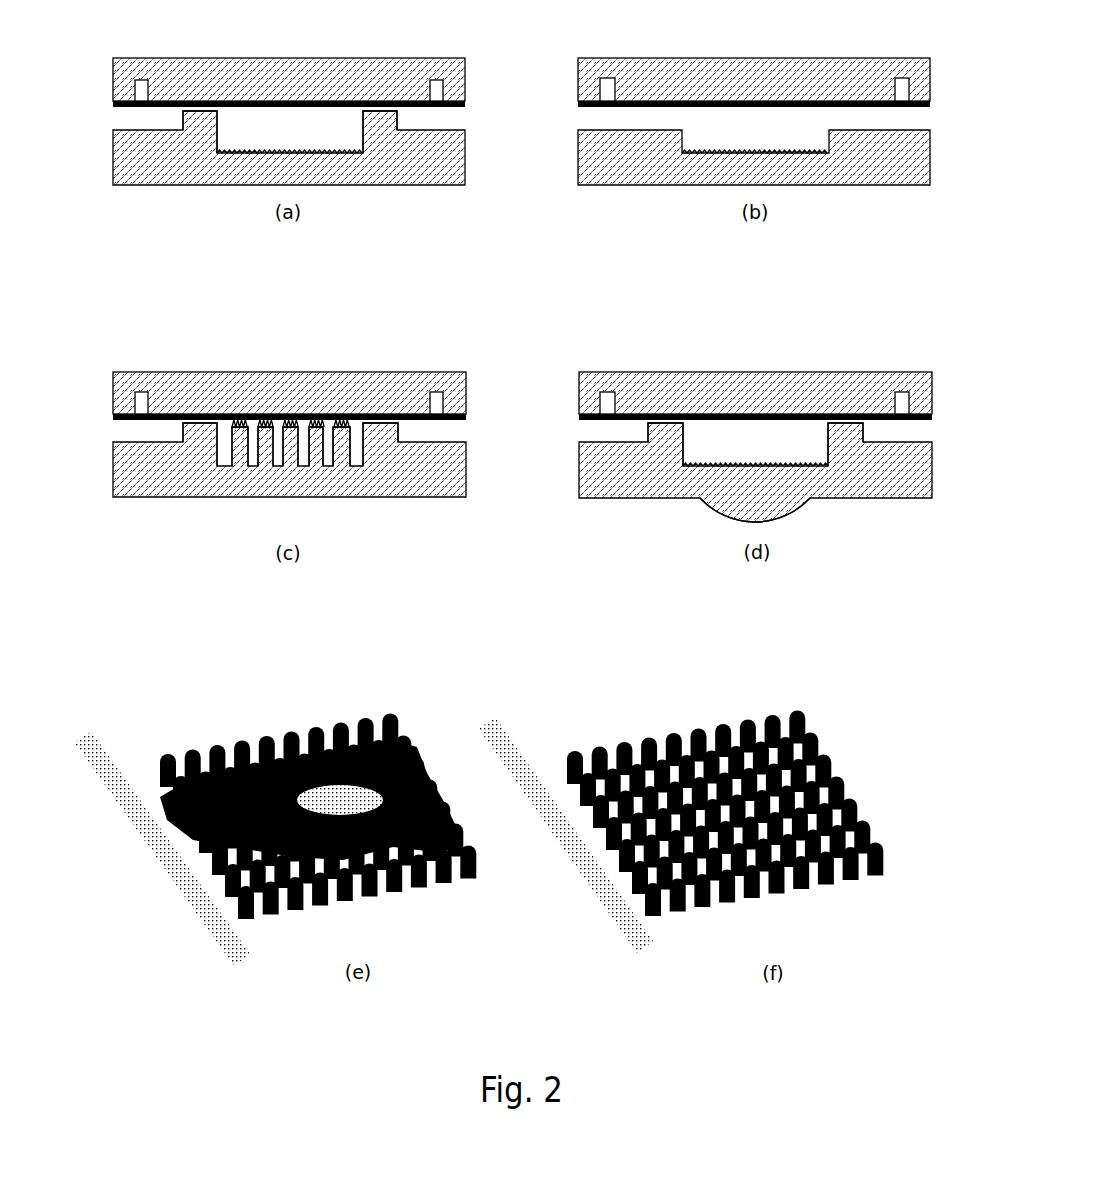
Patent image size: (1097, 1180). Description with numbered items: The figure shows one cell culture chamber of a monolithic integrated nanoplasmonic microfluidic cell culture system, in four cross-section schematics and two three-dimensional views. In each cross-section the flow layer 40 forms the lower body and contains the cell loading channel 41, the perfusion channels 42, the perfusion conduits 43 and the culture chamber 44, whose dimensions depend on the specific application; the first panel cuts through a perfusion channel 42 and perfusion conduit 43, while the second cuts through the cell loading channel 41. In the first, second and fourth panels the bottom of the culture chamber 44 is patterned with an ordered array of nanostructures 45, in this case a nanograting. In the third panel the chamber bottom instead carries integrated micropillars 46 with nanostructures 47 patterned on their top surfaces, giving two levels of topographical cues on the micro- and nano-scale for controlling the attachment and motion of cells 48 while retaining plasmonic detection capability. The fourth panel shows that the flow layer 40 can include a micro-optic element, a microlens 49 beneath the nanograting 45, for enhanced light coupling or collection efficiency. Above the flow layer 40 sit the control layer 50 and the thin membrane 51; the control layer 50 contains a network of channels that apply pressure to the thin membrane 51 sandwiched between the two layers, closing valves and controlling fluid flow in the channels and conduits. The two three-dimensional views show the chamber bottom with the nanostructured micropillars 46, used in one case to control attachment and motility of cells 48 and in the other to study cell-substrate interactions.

The flow layer 40 is at (398, 175).
The cell loading channel 41 is at (597, 120).
The perfusion channel 42 is at (140, 120).
The perfusion conduit 43 is at (182, 111).
The culture chamber 44 is at (283, 139).
The nanostructures 45 is at (233, 151).
The micropillars 46 is at (342, 455).
The nanostructures 47 is at (287, 421).
The cells 48 is at (285, 740).
The microlens 49 is at (773, 512).
The control layer 50 is at (245, 65).
The thin membrane 51 is at (578, 103).